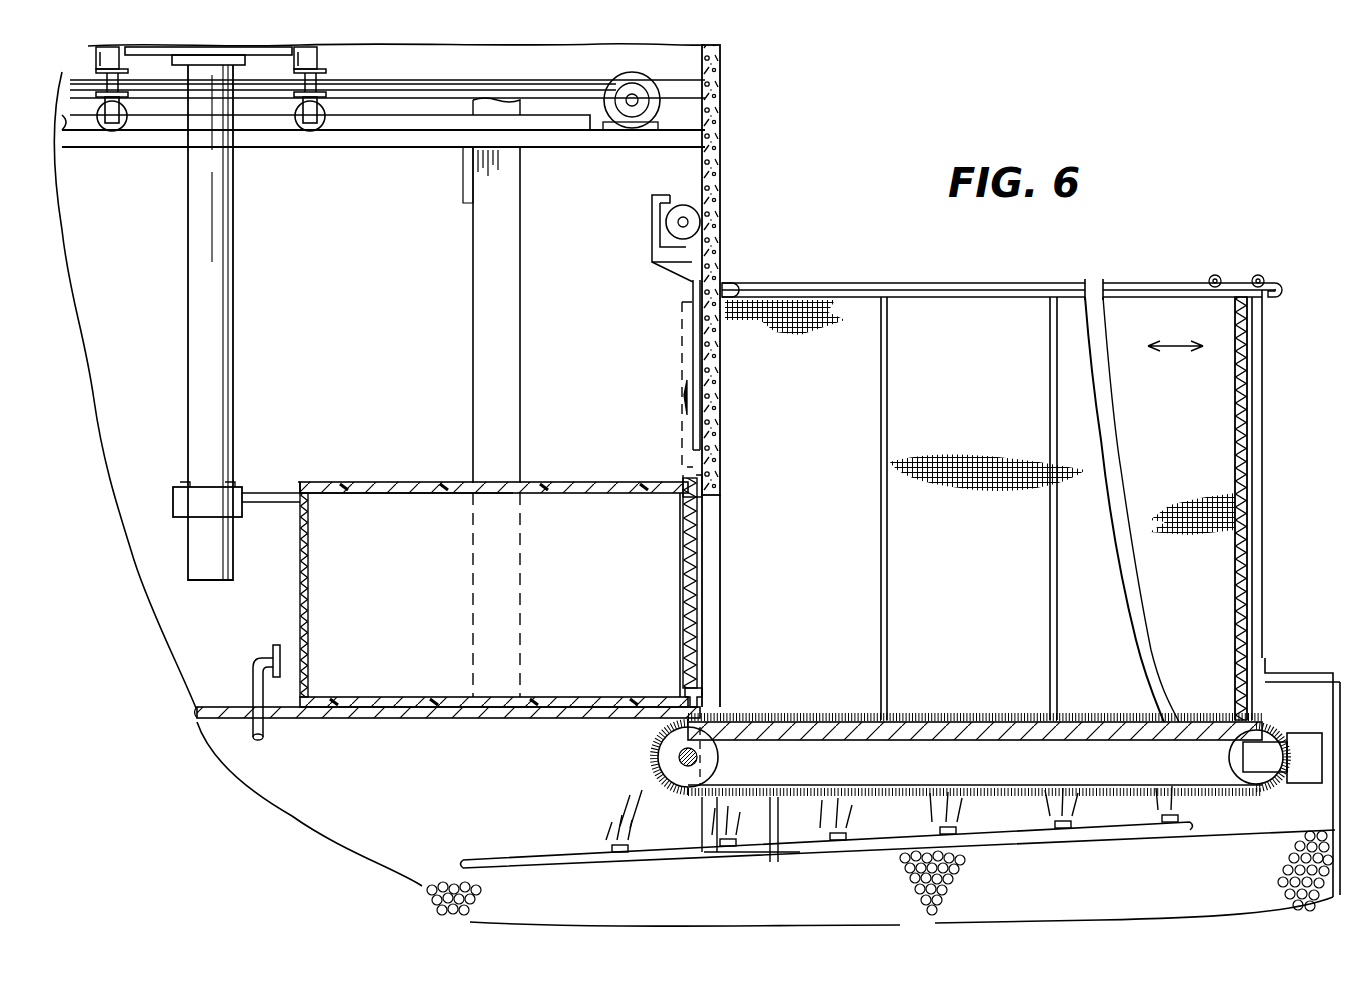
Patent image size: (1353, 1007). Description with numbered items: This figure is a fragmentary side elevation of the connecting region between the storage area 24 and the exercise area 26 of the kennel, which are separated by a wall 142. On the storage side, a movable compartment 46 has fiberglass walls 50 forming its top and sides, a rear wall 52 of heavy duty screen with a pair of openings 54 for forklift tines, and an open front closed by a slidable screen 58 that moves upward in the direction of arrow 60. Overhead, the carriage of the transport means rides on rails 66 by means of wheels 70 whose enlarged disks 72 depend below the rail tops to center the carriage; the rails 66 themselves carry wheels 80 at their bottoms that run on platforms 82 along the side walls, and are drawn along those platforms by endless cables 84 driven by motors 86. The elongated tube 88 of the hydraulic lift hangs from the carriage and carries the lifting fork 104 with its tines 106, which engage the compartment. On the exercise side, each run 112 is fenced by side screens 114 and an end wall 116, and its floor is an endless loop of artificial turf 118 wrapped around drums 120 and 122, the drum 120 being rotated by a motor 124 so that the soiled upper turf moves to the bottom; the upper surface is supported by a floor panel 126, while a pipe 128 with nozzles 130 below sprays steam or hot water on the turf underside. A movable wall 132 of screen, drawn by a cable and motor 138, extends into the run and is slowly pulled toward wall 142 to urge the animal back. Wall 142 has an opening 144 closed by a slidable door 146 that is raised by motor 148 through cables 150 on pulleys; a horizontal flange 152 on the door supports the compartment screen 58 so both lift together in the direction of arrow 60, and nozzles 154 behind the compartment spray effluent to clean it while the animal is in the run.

The storage area 24 is at (404, 296).
The exercise area 26 is at (1163, 274).
The movable compartment 46 is at (556, 485).
The fiberglass walls 50 is at (592, 493).
The rear wall 52 is at (310, 586).
The openings 54 is at (308, 505).
The slidable screen 58 is at (683, 565).
The arrow 60 is at (683, 398).
The rails 66 is at (106, 88).
The wheels 70 is at (320, 58).
The enlarged disk 72 is at (424, 116).
The wheels 80 is at (122, 133).
The platforms 82 is at (403, 150).
The endless cables 84 is at (440, 85).
The motors 86 is at (640, 80).
The elongated tube 88 is at (233, 308).
The lifting fork 104 is at (232, 492).
The tines 106 is at (273, 505).
The run 112 is at (1247, 512).
The side screens 114 is at (1215, 447).
The end wall 116 is at (1264, 548).
The artificial turf 118 is at (940, 718).
The drum 120 is at (1232, 758).
The drum 122 is at (720, 757).
The motor 124 is at (1303, 783).
The floor panel 126 is at (1013, 730).
The pipe 128 is at (1022, 848).
The nozzles 130 is at (729, 848).
The movable wall 132 is at (1245, 362).
The motor 138 is at (740, 288).
The wall 142 is at (722, 188).
The opening 144 is at (722, 566).
The slidable door 146 is at (700, 480).
The motor 148 is at (683, 205).
The cables 150 is at (700, 297).
The flange 152 is at (702, 698).
The nozzles 154 is at (256, 665).